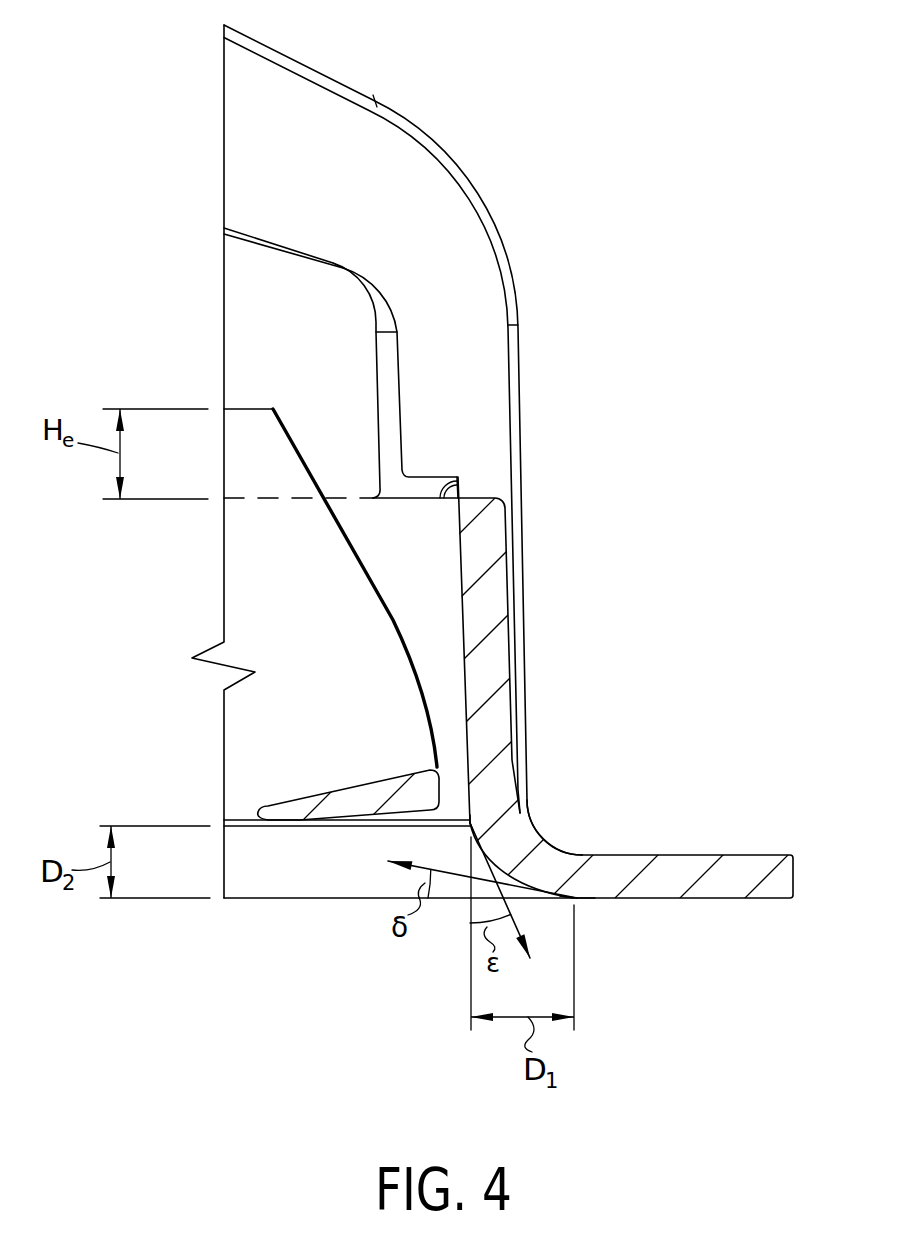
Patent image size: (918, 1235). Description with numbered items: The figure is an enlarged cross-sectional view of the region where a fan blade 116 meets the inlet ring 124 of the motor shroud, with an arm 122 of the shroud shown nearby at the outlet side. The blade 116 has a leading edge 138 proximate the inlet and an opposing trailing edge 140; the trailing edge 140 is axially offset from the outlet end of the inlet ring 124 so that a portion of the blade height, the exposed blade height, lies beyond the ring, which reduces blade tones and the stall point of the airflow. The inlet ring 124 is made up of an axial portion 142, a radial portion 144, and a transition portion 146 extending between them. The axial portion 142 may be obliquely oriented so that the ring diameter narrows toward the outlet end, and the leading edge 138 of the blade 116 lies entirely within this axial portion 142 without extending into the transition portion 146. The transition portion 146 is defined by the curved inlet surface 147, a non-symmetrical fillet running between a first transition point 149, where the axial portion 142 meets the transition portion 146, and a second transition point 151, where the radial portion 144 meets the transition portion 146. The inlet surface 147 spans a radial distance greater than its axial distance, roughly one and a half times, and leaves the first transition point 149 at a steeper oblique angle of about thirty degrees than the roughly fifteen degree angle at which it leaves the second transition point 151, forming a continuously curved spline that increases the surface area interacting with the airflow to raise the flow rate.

The blade 116 is at (258, 549).
The arm 122 is at (425, 212).
The inlet ring 124 is at (622, 710).
The leading edge 138 is at (242, 817).
The trailing edge 140 is at (242, 407).
The axial portion 142 is at (488, 607).
The radial portion 144 is at (745, 877).
The transition portion 146 is at (505, 838).
The inlet surface 147 is at (572, 856).
The first transition point 149 is at (472, 823).
The second transition point 151 is at (577, 898).